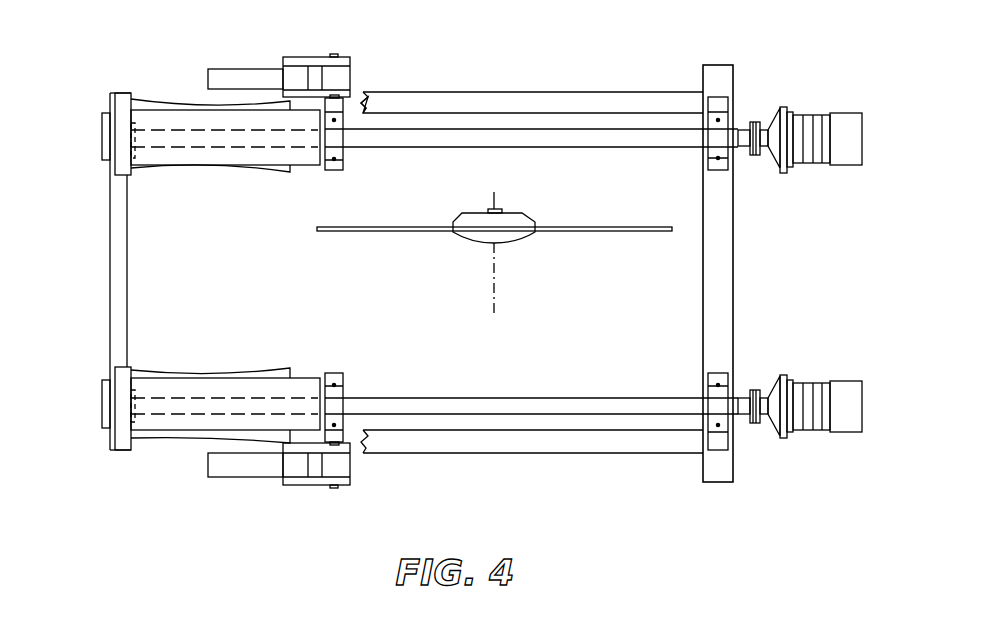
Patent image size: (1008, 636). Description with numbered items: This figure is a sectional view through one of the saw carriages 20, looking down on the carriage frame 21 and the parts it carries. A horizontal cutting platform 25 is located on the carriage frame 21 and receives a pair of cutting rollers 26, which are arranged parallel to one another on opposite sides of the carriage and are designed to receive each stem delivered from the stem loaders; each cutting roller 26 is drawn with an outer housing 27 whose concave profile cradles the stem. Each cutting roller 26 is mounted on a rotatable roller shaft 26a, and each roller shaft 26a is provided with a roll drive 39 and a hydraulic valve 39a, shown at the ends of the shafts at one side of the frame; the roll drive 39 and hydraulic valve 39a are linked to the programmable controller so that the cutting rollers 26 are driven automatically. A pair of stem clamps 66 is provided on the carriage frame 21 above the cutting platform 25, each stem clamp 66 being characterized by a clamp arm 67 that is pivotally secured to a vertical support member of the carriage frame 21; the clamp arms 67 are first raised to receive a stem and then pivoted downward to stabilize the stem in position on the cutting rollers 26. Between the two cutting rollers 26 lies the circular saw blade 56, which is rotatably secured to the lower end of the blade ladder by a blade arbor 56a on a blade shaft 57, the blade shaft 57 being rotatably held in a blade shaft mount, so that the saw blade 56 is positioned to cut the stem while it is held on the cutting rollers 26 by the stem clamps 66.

The saw carriage 20 is at (262, 528).
The carriage frame 21 is at (740, 271).
The cutting platform 25 is at (115, 214).
The cutting roller 26 is at (250, 180).
The roller shaft 26a is at (645, 150).
The cylinder housing 27 is at (153, 177).
The roll drive 39 is at (848, 102).
The hydraulic valve 39a is at (845, 158).
The circular saw blade 56 is at (625, 232).
The blade arbor 56a is at (462, 243).
The blade shaft 57 is at (497, 302).
The stem clamp 66 is at (246, 281).
The clamp arm 67 is at (253, 69).